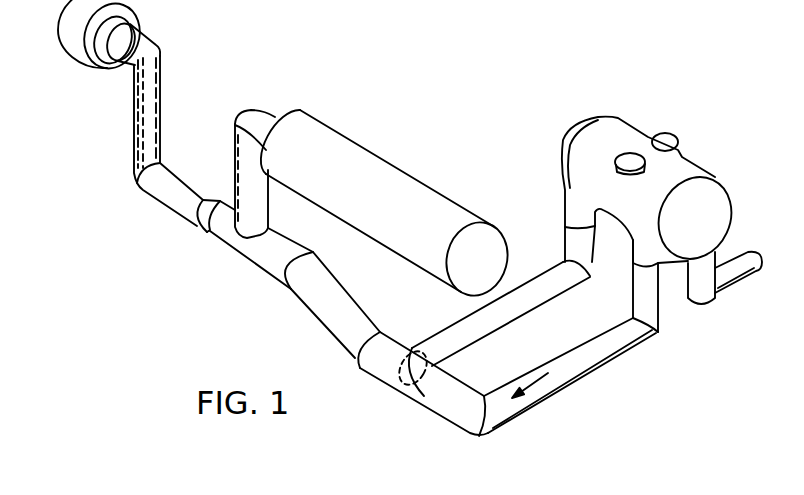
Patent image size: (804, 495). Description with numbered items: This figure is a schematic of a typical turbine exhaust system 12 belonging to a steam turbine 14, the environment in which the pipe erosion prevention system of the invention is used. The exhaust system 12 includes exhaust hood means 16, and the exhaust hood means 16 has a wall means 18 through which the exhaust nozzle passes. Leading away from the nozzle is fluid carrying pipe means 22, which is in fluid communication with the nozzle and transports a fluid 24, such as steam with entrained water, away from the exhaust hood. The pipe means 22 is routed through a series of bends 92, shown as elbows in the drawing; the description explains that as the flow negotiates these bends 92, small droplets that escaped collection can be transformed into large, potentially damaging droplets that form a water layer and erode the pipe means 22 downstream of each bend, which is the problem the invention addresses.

The exhaust system 12 is at (590, 371).
The steam turbine 14 is at (712, 200).
The exhaust hood means 16 is at (633, 265).
The wall means 18 is at (661, 264).
The fluid carrying pipe means 22 is at (537, 408).
The fluid 24 is at (562, 336).
The bend 92 is at (136, 183).